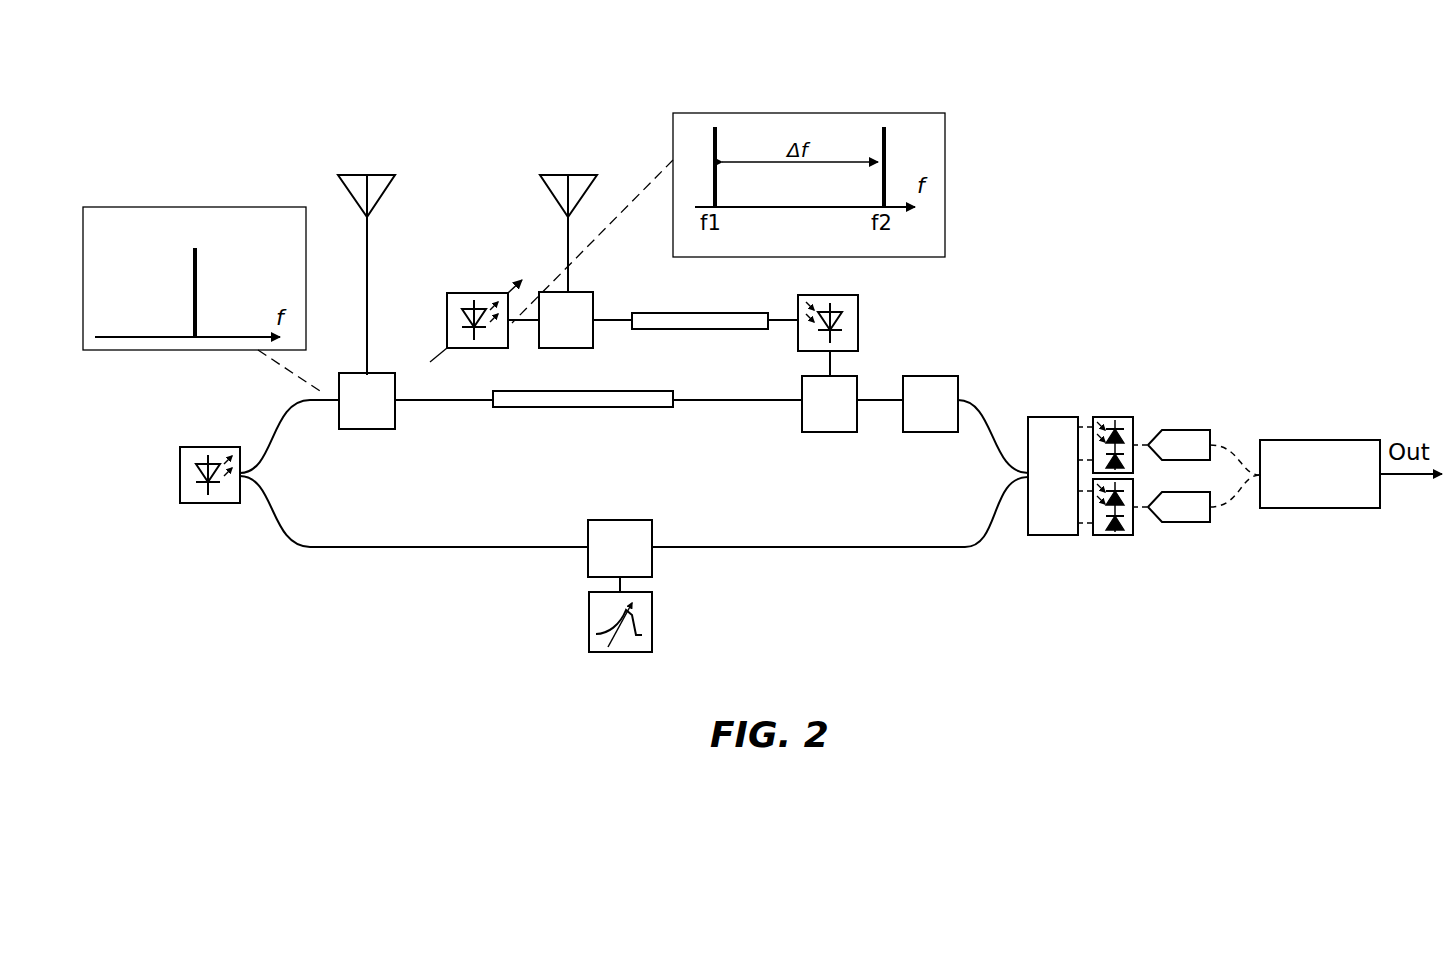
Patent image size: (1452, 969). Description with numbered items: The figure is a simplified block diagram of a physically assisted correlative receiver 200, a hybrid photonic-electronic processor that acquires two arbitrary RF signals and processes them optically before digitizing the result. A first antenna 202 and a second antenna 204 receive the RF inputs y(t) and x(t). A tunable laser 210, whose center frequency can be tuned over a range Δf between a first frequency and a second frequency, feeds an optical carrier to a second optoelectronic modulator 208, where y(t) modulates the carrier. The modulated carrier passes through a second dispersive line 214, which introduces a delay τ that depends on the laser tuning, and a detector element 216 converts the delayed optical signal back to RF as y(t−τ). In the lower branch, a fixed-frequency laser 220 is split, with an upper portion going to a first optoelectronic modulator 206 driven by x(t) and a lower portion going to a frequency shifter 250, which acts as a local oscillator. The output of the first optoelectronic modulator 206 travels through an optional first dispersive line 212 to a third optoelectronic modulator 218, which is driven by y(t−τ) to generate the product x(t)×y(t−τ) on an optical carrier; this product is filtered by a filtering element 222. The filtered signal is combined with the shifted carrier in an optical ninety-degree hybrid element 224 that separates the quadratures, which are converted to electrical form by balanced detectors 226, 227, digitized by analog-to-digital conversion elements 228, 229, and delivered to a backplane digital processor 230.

The physically assisted correlative receiver 200 is at (570, 38).
The first antenna 202 is at (540, 180).
The second antenna 204 is at (338, 178).
The first optoelectronic modulator 206 is at (358, 373).
The second optoelectronic modulator 208 is at (556, 292).
The tunable laser 210 is at (462, 293).
The first dispersive line 212 is at (497, 407).
The second dispersive line 214 is at (662, 313).
The detector element 216 is at (858, 297).
The third optoelectronic modulator 218 is at (805, 398).
The fixed-frequency laser 220 is at (205, 447).
The filtering element 222 is at (958, 382).
The optical 90-degree hybrid element 224 is at (1048, 417).
The balanced detector 226 is at (1114, 417).
The balanced detector 227 is at (1117, 535).
The analog-to-digital conversion element 228 is at (1178, 430).
The analog-to-digital conversion element 229 is at (1190, 522).
The backplane digital processor 230 is at (1290, 440).
The frequency shifter 250 is at (620, 520).